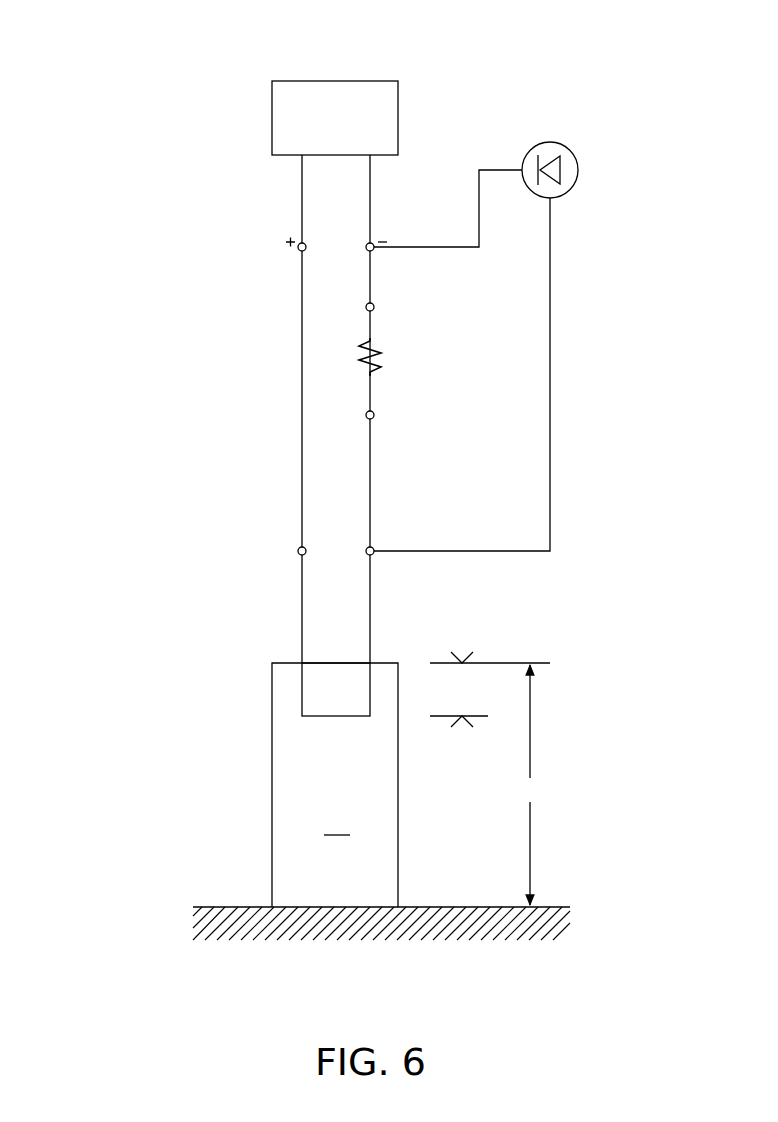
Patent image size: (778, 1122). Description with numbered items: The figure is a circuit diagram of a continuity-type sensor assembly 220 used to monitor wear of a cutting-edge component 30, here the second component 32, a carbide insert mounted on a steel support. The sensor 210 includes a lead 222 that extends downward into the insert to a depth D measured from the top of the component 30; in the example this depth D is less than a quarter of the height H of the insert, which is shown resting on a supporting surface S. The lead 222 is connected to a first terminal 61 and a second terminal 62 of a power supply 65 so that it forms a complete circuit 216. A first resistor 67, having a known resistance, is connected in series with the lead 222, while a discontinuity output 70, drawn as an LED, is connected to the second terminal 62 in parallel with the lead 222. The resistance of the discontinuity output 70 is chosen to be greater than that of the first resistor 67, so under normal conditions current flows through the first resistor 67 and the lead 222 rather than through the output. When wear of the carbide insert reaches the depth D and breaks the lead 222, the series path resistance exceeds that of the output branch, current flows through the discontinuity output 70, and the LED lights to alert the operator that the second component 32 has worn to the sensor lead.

The sensor assembly 220 is at (188, 70).
The circuit 216 is at (186, 264).
The sensor 210 is at (276, 478).
The power supply 65 is at (352, 80).
The first terminal 61 is at (300, 243).
The second terminal 62 is at (372, 243).
The first resistor 67 is at (390, 344).
The discontinuity output 70 is at (565, 128).
The lead 222 is at (302, 685).
The component 30 is at (270, 824).
The second component 32 is at (337, 823).
The surface S is at (215, 906).
The depth D is at (490, 689).
The height H is at (530, 785).